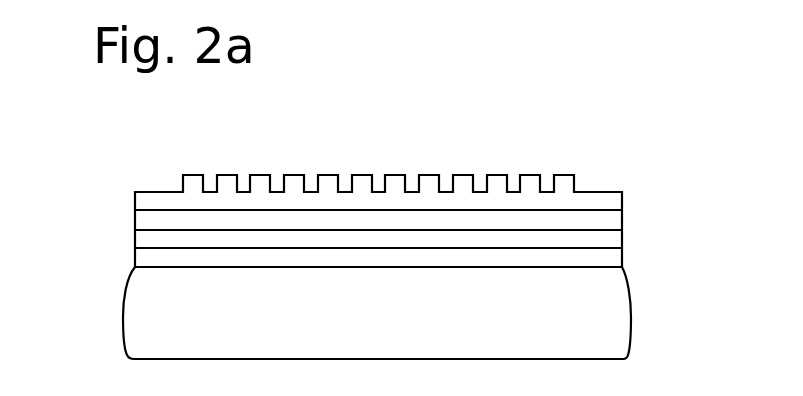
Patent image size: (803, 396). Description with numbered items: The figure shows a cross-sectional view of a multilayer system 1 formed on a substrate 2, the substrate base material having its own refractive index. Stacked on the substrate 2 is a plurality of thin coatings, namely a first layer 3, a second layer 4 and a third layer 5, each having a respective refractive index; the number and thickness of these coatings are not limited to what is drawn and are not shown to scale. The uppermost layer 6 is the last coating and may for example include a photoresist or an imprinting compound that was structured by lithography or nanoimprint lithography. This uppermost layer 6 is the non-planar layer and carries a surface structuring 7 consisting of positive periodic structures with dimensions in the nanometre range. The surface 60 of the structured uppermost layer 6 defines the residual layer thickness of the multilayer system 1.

The multilayer system 1 is at (497, 153).
The substrate 2 is at (602, 329).
The first layer 3 is at (602, 263).
The second layer 4 is at (602, 243).
The third layer 5 is at (602, 225).
The uppermost layer 6 is at (585, 202).
The surface structuring 7 is at (297, 175).
The surface of the uppermost layer 60 is at (159, 190).